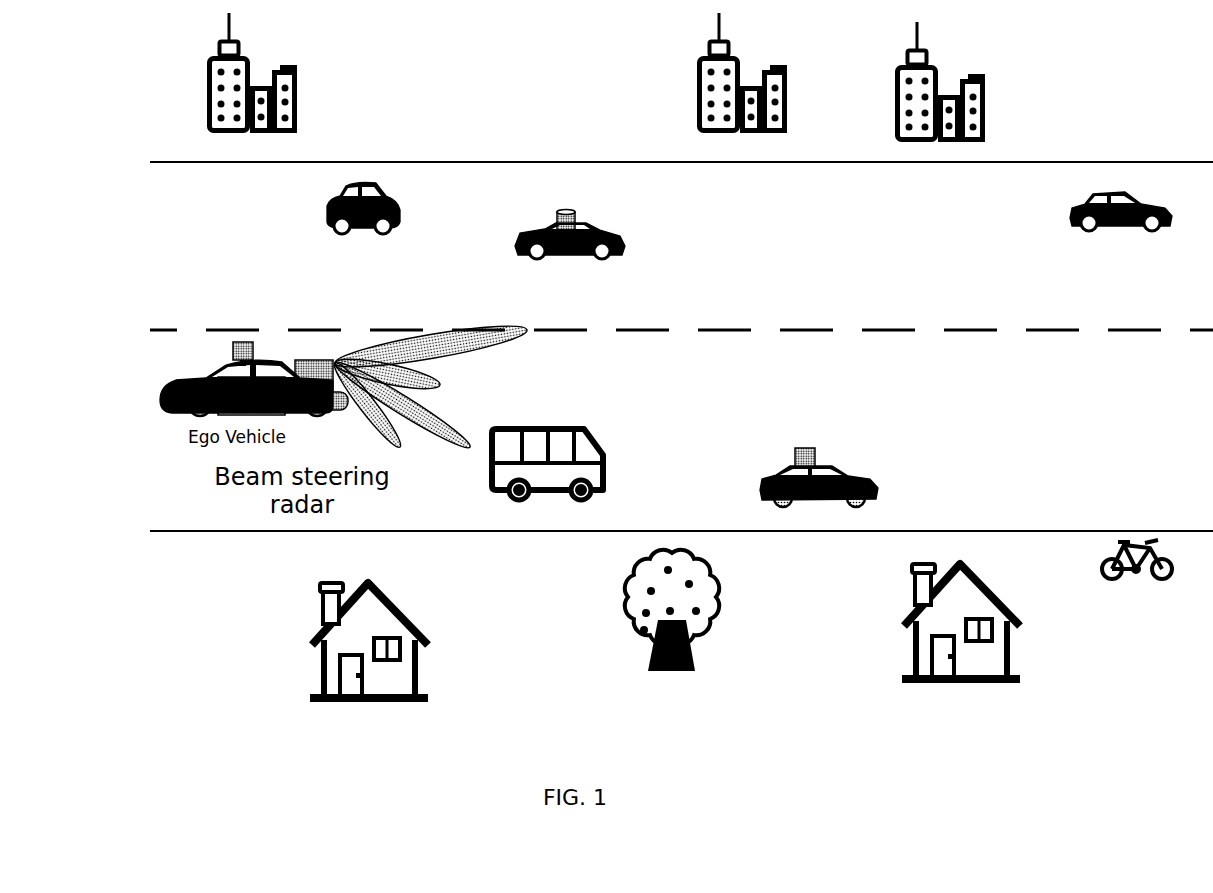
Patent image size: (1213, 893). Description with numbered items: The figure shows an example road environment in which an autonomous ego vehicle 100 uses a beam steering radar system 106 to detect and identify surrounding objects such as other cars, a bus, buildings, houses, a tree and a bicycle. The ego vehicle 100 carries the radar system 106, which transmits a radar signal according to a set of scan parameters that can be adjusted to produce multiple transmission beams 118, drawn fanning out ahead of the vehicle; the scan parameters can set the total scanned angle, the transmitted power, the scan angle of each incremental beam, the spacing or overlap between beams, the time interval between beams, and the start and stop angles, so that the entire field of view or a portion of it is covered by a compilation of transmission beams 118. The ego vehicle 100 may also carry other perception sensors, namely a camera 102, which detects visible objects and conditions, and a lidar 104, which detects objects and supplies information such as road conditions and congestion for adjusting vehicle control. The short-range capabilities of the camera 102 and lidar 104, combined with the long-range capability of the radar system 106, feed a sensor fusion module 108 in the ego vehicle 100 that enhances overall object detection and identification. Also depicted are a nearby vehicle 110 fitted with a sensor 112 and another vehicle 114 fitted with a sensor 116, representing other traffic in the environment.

The ego vehicle 100 is at (165, 380).
The camera sensor 102 is at (333, 410).
The lidar sensor 104 is at (237, 342).
The beam steering radar system 106 is at (313, 370).
The sensor fusion module 108 is at (227, 400).
The autonomous vehicle 110 is at (522, 235).
The sensor on vehicle 110 112 is at (580, 227).
The autonomous vehicle 114 is at (768, 490).
The sensor on vehicle 114 116 is at (795, 460).
The transmission beams 118 is at (437, 392).